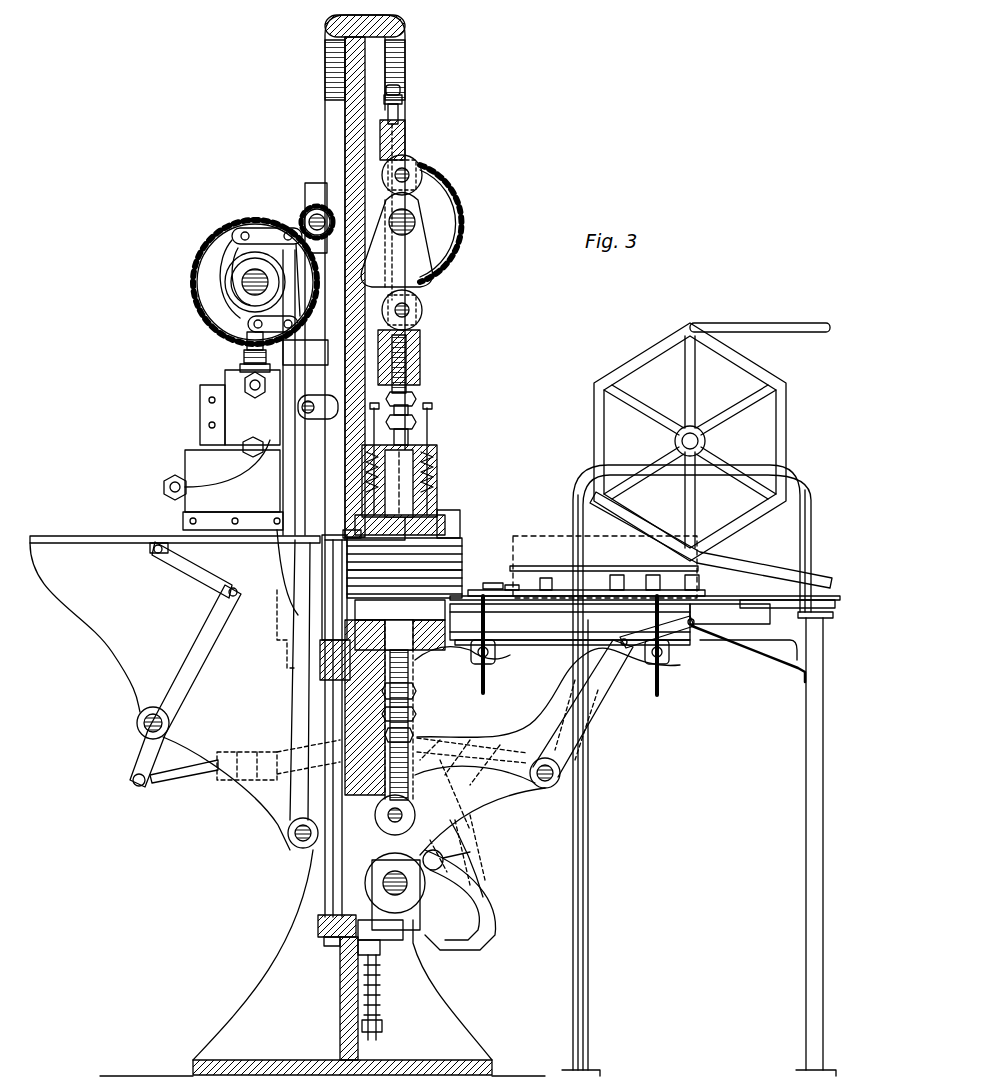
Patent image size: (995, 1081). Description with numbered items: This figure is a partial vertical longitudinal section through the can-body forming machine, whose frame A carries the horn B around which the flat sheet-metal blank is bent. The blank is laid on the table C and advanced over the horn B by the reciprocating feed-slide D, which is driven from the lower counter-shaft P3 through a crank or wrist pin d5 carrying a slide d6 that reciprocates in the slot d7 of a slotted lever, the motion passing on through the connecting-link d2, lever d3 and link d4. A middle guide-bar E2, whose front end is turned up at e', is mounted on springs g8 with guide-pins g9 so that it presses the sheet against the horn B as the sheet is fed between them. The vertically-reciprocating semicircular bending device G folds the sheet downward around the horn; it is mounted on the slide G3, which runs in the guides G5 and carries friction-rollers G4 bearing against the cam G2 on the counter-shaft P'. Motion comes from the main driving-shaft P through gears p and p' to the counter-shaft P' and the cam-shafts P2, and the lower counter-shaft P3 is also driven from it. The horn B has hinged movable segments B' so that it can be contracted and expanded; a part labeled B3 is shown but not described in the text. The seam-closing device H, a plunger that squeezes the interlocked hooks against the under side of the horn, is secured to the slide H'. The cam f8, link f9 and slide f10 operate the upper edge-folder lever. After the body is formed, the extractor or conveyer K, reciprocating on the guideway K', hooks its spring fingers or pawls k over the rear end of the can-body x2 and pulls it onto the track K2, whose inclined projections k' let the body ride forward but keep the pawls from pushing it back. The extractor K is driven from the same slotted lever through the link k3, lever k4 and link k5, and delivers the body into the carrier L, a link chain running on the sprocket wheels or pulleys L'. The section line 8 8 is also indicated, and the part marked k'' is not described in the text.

The frame A is at (406, 62).
The guides G5 is at (366, 100).
The slide G3 is at (408, 148).
The friction-rollers G4 is at (420, 168).
The cam G2 is at (396, 240).
The bending device G is at (440, 515).
The counter-shaft P' is at (458, 223).
The main driving-shaft P is at (255, 252).
The gear p is at (329, 210).
The gear p' is at (192, 279).
The cam-shafts P2 is at (247, 293).
The lower counter-shaft P3 is at (365, 883).
The cam f8 is at (245, 252).
The link f9 is at (244, 360).
The slide f10 is at (223, 450).
The section line 8 is at (410, 410).
The guide-pins g9 is at (432, 410).
The springs g8 is at (440, 458).
The middle guide-bar E2 is at (460, 518).
The turned-up front end e' is at (343, 523).
The horn B is at (404, 554).
The movable segments B' is at (404, 584).
The frame arm B3 is at (292, 690).
The seam-closing device H is at (400, 624).
The slide H' is at (345, 734).
The table C is at (90, 536).
The feed-slide D is at (166, 567).
The link d4 is at (194, 575).
The lever d3 is at (195, 652).
The connecting-link d2 is at (205, 782).
The crank or wrist pin d5 is at (470, 852).
The slide d6 is at (478, 870).
The slot d7 is at (495, 905).
The sprocket wheels or pulleys L' is at (689, 442).
The carrier device L is at (711, 540).
The guideway K' is at (645, 625).
The extractor or conveyer K is at (619, 567).
The spring fingers or pawls k is at (596, 556).
The roller k'' is at (395, 833).
The can-body x2 is at (532, 536).
The track or guide K2 is at (489, 577).
The inclined projections k' is at (478, 698).
The link k3 is at (478, 728).
The lever k4 is at (596, 712).
The link k5 is at (680, 655).